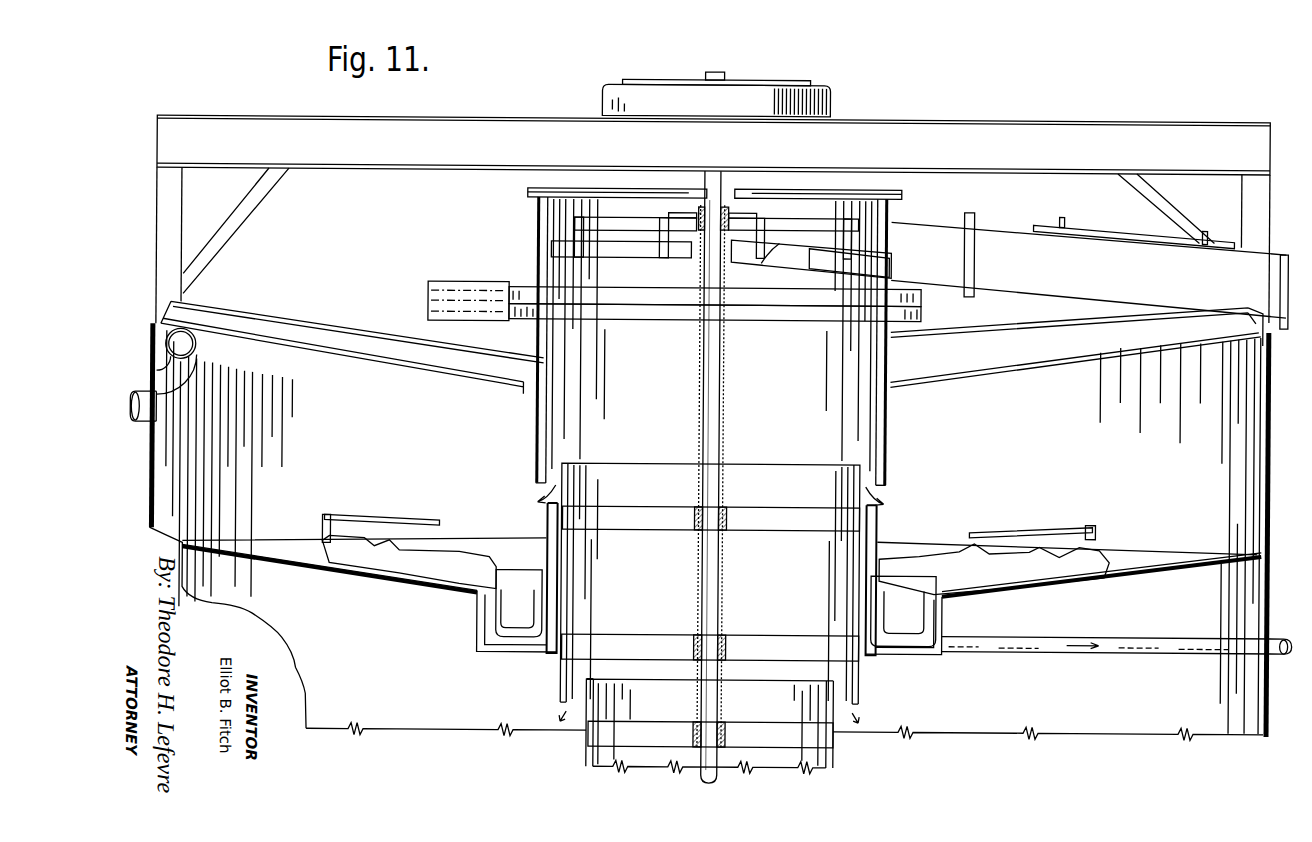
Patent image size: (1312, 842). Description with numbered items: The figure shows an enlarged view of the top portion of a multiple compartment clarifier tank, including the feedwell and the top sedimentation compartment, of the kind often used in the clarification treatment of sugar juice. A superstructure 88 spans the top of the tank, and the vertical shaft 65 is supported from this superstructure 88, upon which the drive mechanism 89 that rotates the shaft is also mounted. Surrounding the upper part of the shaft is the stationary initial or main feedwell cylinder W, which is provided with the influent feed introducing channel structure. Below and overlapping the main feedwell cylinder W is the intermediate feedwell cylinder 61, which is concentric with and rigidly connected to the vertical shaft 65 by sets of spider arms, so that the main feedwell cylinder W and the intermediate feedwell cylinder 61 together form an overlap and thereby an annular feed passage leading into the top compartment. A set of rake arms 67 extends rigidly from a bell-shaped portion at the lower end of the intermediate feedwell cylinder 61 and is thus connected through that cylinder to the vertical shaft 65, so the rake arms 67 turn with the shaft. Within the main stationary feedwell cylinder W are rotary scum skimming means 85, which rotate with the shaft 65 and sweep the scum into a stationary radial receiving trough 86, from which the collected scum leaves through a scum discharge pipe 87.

The intermediate feedwell cylinder 61 is at (548, 495).
The vertical shaft 65 is at (719, 593).
The rake arms 67 is at (910, 558).
The rotary scum skimming means 85 is at (636, 240).
The stationary radial receiving trough 86 is at (835, 244).
The scum discharge pipe 87 is at (995, 233).
The superstructure 88 is at (964, 121).
The drive mechanism 89 is at (828, 99).
The main feedwell cylinder W is at (540, 241).